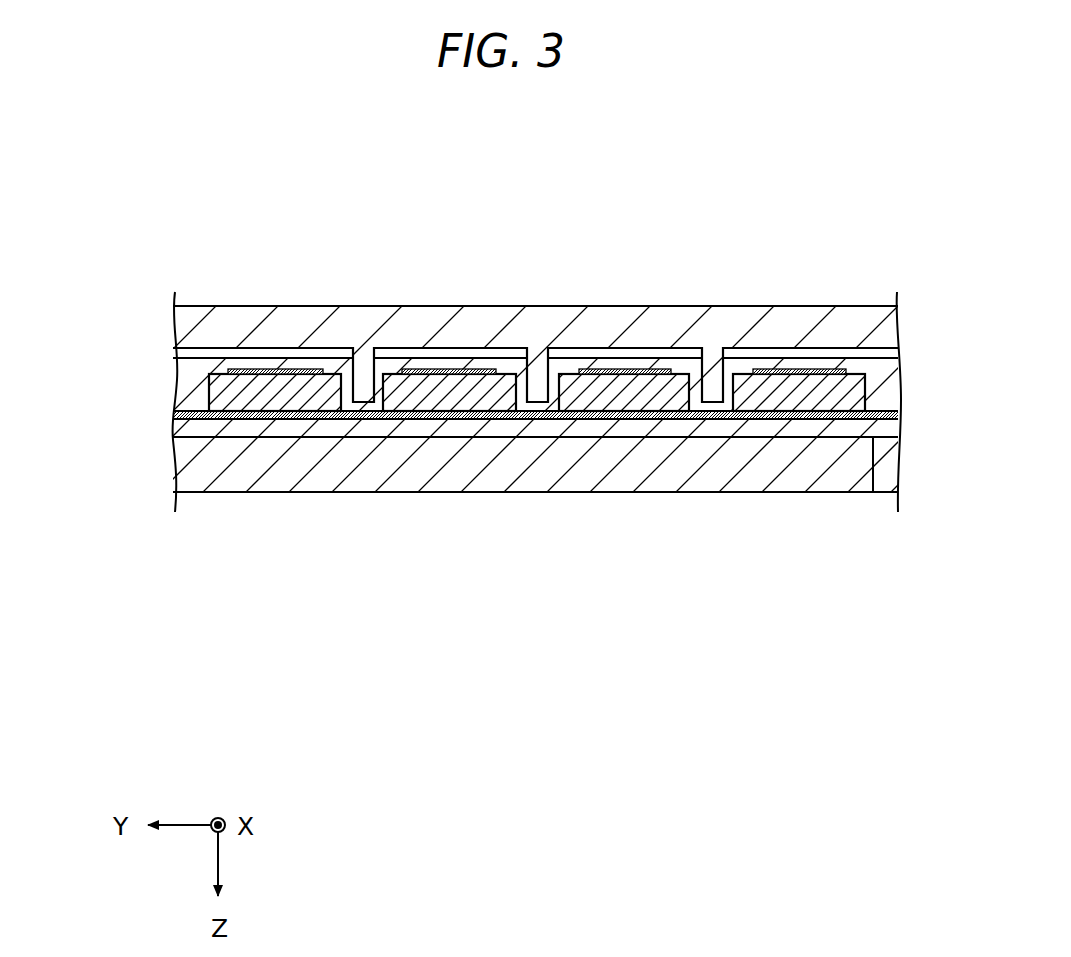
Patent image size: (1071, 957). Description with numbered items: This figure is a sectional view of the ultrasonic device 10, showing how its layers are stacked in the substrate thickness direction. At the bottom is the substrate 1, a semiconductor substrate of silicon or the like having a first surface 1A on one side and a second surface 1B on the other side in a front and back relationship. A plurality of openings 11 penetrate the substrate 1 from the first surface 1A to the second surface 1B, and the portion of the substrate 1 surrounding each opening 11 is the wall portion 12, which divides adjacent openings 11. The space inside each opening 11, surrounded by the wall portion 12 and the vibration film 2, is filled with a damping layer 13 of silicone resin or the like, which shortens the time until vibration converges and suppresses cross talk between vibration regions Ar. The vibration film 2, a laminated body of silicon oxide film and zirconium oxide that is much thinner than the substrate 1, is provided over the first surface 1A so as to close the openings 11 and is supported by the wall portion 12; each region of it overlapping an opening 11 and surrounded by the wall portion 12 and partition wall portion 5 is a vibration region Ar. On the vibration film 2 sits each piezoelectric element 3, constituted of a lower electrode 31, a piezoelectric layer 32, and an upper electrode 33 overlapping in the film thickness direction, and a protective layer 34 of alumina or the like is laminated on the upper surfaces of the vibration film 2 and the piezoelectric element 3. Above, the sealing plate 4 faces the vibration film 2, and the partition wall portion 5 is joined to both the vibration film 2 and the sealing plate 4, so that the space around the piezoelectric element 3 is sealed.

The ultrasonic device 10 is at (124, 189).
The substrate 1 is at (535, 445).
The first surface 1A is at (880, 420).
The second surface 1B is at (882, 494).
The opening 11 is at (872, 467).
The wall portion 12 is at (883, 478).
The damping layer 13 is at (554, 470).
The vibration film 2 is at (890, 427).
The piezoelectric element 3 is at (535, 350).
The lower electrode 31 is at (535, 376).
The piezoelectric layer 32 is at (327, 387).
The upper electrode 33 is at (360, 230).
The protective layer 34 is at (745, 363).
The sealing plate 4 is at (527, 322).
The partition wall portion 5 is at (368, 352).
The vibration region Ar is at (244, 433).